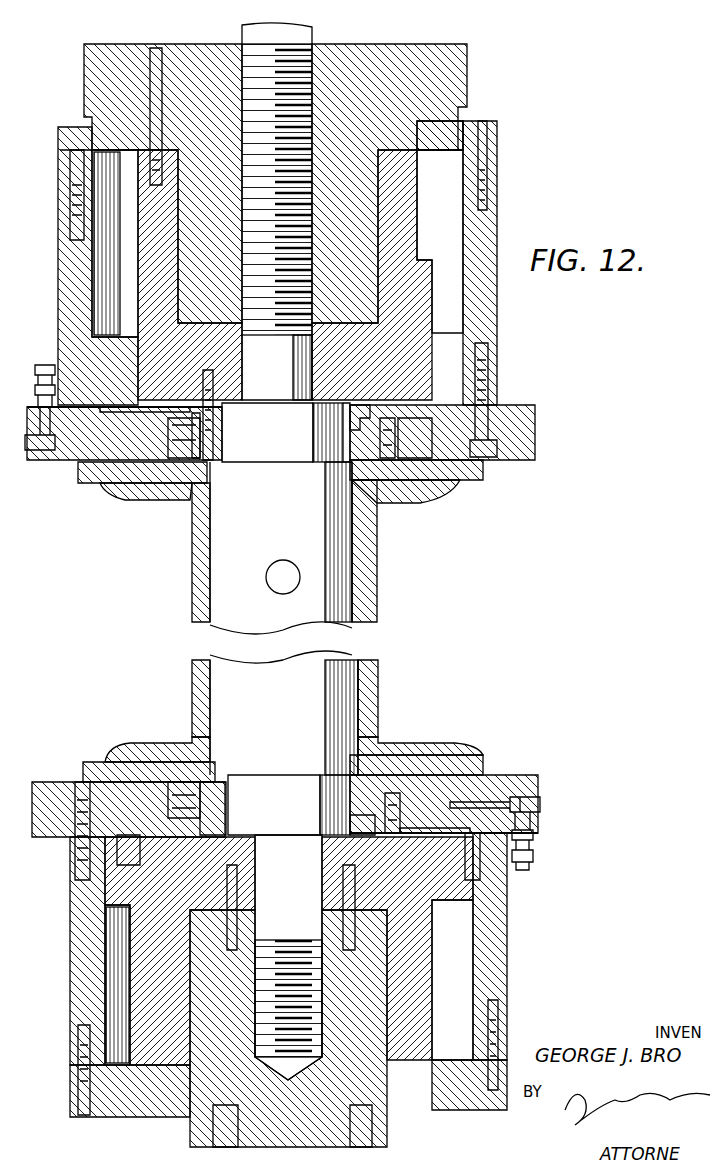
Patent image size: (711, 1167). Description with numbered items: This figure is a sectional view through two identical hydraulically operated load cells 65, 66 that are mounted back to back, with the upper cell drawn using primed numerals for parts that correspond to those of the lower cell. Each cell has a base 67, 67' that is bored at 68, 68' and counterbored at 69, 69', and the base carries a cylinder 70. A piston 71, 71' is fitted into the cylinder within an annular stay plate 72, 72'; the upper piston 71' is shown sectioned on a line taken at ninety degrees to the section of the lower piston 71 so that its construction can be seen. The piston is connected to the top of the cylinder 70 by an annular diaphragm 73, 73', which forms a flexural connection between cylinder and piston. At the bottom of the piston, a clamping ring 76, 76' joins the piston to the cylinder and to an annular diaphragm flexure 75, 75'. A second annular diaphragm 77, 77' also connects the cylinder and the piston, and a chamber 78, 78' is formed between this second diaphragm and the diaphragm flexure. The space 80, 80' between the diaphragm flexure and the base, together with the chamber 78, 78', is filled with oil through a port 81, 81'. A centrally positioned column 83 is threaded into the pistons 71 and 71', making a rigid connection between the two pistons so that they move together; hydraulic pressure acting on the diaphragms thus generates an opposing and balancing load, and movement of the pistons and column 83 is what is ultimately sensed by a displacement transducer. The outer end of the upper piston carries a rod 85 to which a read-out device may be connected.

The hydraulically operated load cell 65 is at (508, 920).
The hydraulically operated load cell 66 is at (500, 205).
The base 67 is at (307, 815).
The base 67' is at (306, 401).
The bore 68 is at (383, 842).
The bore 68' is at (369, 395).
The counterbore 69 is at (406, 769).
The counterbore 69' is at (395, 482).
The cylinder 70 is at (490, 952).
The piston 71 is at (328, 951).
The piston 71' is at (337, 275).
The annular stay plate 72 is at (289, 1024).
The annular stay plate 72' is at (277, 243).
The annular diaphragm 73 is at (288, 1075).
The annular diaphragm 73' is at (282, 114).
The annular diaphragm flexure 75 is at (444, 773).
The annular diaphragm flexure 75' is at (124, 394).
The clamping ring 76 is at (281, 805).
The clamping ring 76' is at (286, 432).
The second annular diaphragm 77 is at (233, 808).
The second annular diaphragm 77' is at (170, 476).
The chamber 78 is at (177, 830).
The chamber 78' is at (156, 438).
The space 80 is at (77, 853).
The space 80' is at (429, 471).
The port 81 is at (495, 801).
The port 81' is at (34, 434).
The column 83 is at (240, 652).
The rod 85 is at (250, 25).